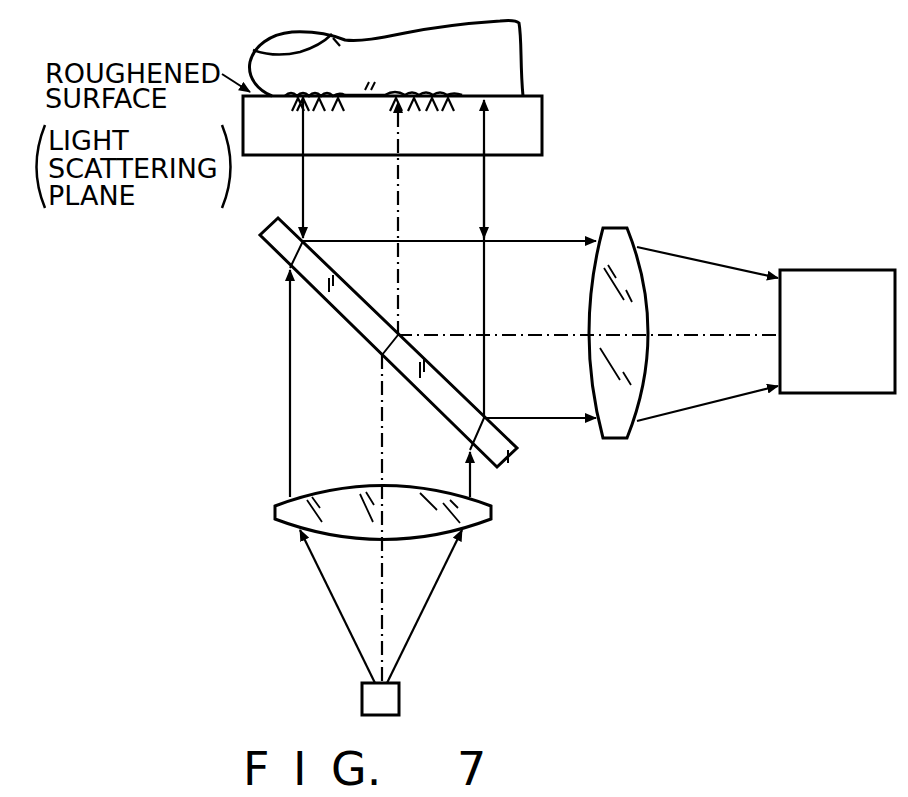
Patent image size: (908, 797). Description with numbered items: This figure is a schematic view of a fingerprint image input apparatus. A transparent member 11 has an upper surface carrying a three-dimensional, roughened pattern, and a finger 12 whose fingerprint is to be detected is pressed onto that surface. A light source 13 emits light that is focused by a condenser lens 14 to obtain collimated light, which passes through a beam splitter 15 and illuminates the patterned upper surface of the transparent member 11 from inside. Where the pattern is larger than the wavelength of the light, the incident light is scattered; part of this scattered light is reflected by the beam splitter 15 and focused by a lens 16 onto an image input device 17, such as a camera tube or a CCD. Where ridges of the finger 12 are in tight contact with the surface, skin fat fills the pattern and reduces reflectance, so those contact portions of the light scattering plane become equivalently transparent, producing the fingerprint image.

The transparent member 11 is at (542, 133).
The finger 12 is at (523, 62).
The light source 13 is at (399, 698).
The condenser lens 14 is at (492, 515).
The beam splitter 15 is at (512, 455).
The lens 16 is at (636, 242).
The image input device 17 is at (812, 270).